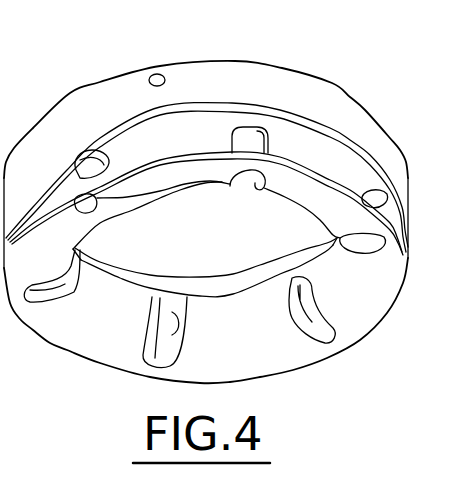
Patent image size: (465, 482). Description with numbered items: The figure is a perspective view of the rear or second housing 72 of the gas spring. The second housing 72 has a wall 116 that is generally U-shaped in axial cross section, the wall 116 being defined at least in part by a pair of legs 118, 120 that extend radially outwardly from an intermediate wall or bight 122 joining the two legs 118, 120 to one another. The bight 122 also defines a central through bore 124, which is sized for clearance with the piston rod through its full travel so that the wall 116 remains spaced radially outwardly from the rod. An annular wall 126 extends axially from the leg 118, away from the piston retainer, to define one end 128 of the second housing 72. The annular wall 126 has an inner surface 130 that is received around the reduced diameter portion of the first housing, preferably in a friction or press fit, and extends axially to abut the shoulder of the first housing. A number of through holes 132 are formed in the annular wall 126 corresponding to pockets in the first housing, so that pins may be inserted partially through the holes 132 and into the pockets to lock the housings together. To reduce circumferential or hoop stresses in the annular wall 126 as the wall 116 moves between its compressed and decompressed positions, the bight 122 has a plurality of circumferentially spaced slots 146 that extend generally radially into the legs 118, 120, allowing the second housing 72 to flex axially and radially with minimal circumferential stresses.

The second housing 72 is at (262, 75).
The wall 116 is at (312, 144).
The leg 118 is at (365, 160).
The leg 120 is at (48, 342).
The bight 122 is at (104, 283).
The through bore 124 is at (250, 297).
The annular wall 126 is at (72, 100).
The end 128 is at (339, 86).
The inner surface 130 is at (173, 278).
The through holes 132 is at (157, 74).
The slots 146 is at (255, 181).